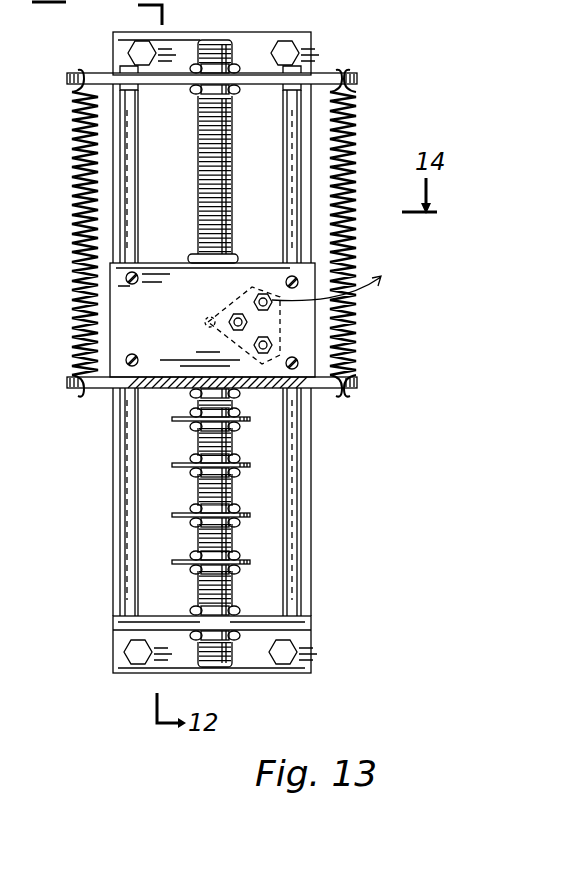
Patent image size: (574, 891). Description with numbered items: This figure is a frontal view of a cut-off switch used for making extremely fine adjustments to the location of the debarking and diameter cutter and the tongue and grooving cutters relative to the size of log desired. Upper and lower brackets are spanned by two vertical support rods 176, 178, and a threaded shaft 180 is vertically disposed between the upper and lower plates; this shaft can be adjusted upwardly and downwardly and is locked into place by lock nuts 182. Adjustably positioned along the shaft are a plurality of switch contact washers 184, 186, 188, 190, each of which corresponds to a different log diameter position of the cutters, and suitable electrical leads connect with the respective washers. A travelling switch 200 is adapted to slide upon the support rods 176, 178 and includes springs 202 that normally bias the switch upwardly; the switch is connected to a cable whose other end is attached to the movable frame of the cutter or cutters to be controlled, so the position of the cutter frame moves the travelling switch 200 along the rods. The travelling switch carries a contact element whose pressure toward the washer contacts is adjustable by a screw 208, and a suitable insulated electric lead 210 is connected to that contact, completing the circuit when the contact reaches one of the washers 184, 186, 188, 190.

The vertical support rod 176 is at (287, 143).
The vertical support rod 178 is at (136, 142).
The threaded shaft 180 is at (211, 42).
The lock nuts 182 is at (240, 90).
The switch contact washer 184 is at (250, 562).
The switch contact washer 186 is at (250, 515).
The switch contact washer 188 is at (250, 465).
The switch contact washer 190 is at (250, 419).
The travelling switch 200 is at (186, 343).
The springs 202 is at (72, 168).
The screw 208 is at (231, 317).
The insulated electric lead 210 is at (382, 287).